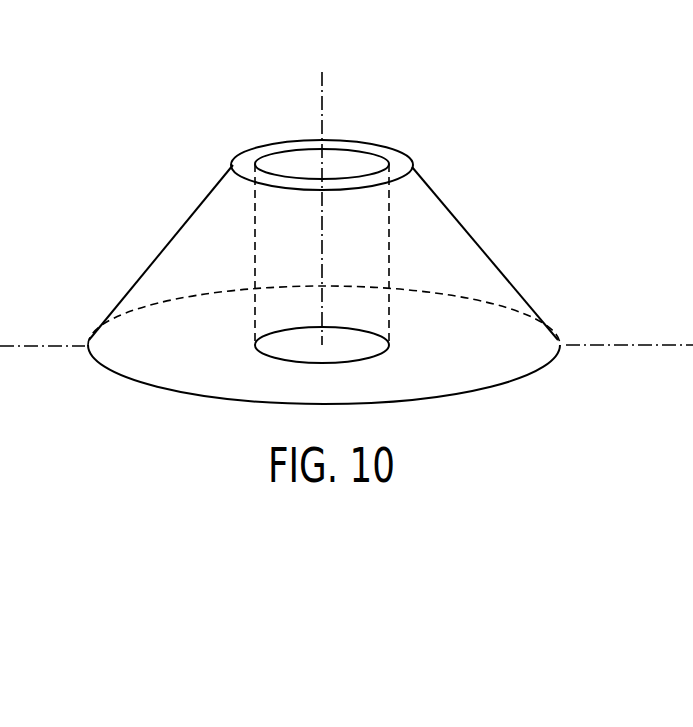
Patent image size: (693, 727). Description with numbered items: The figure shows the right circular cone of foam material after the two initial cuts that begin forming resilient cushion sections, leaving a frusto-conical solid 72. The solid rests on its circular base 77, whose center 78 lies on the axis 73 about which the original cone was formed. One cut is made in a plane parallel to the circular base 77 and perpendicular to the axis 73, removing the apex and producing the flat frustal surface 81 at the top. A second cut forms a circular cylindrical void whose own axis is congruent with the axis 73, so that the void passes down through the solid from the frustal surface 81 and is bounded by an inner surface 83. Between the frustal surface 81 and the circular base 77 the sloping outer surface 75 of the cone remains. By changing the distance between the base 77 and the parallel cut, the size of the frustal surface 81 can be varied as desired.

The frusto-conical solid 72 is at (150, 246).
The axis 73 is at (328, 110).
The outer surface 75 is at (473, 277).
The circular base 77 is at (493, 350).
The center 78 is at (310, 348).
The frustal surface 81 is at (245, 165).
The inner surface 83 is at (386, 270).